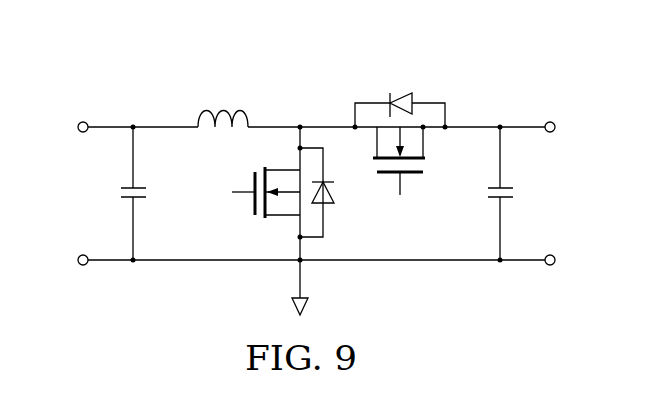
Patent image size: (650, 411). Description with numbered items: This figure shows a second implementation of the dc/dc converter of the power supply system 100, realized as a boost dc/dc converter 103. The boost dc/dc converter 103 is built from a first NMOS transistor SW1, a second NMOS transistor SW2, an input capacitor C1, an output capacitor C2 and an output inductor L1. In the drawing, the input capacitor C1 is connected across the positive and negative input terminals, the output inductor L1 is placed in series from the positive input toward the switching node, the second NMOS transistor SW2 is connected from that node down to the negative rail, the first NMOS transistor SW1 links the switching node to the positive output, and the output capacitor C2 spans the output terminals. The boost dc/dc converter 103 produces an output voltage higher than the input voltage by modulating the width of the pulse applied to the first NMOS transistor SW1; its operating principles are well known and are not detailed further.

The dc/dc converter 103 is at (514, 58).
The power supply system 100 is at (537, 407).
The output inductor L1 is at (223, 108).
The input capacitor C1 is at (118, 193).
The output capacitor C2 is at (484, 193).
The first NMOS transistor SW1 is at (400, 155).
The second NMOS transistor SW2 is at (261, 182).